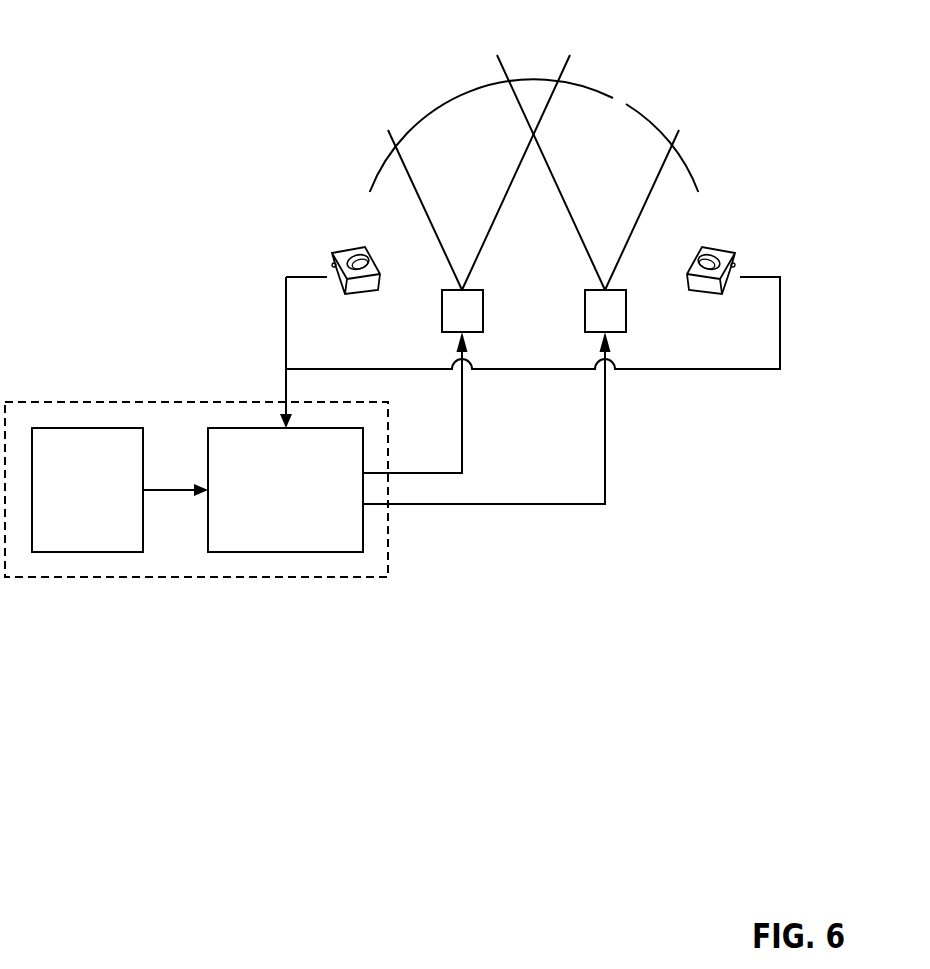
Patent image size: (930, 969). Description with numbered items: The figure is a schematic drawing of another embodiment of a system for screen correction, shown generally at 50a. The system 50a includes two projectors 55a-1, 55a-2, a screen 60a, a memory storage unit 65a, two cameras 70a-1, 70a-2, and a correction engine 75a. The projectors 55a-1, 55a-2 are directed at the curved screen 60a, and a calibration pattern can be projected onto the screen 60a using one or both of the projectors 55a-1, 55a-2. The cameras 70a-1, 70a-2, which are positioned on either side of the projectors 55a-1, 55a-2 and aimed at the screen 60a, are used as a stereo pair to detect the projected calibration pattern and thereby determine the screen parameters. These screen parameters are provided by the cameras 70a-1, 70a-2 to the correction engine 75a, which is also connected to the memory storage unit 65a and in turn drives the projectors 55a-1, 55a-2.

The system for screen correction 50a is at (170, 60).
The projector 55a-1 is at (462, 309).
The projector 55a-2 is at (607, 309).
The screen 60a is at (621, 103).
The memory storage unit 65a is at (110, 502).
The camera 70a-1 is at (350, 250).
The camera 70a-2 is at (717, 250).
The correction engine 75a is at (310, 502).